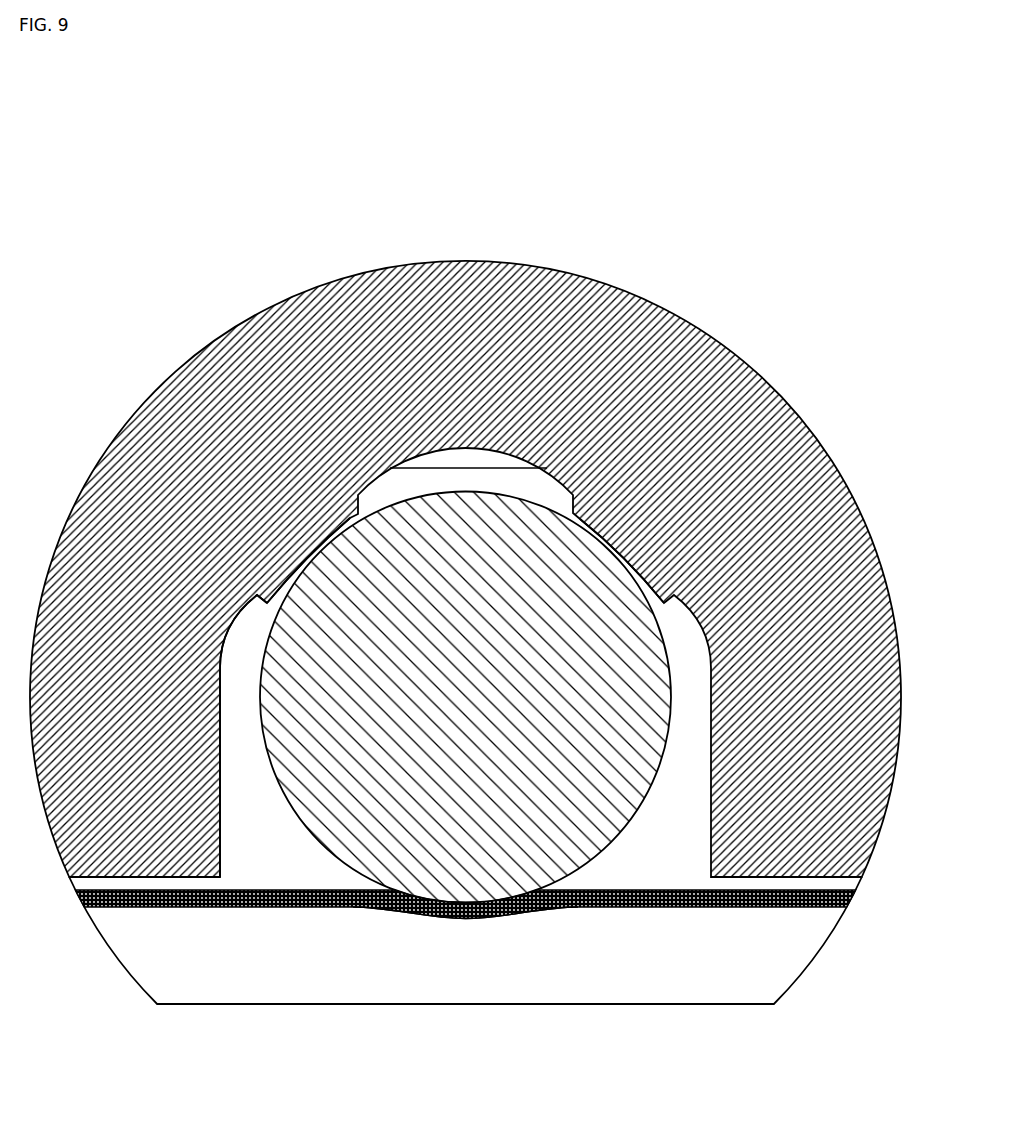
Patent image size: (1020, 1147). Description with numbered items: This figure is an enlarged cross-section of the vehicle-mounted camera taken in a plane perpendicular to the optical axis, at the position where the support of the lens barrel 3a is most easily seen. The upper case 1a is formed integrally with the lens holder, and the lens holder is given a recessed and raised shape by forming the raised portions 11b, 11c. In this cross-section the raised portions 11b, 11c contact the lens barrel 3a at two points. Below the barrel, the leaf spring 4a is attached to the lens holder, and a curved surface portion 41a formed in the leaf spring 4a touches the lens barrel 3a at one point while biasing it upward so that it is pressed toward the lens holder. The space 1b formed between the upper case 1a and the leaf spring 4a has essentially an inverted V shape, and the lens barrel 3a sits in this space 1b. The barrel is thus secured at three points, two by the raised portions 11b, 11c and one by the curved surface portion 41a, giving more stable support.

The upper case 1a is at (457, 285).
The space 1b is at (242, 673).
The raised portion 11b is at (313, 543).
The raised portion 11c is at (618, 548).
The lens barrel 3a is at (533, 850).
The leaf spring 4a is at (295, 907).
The curved surface portion 41a is at (468, 918).